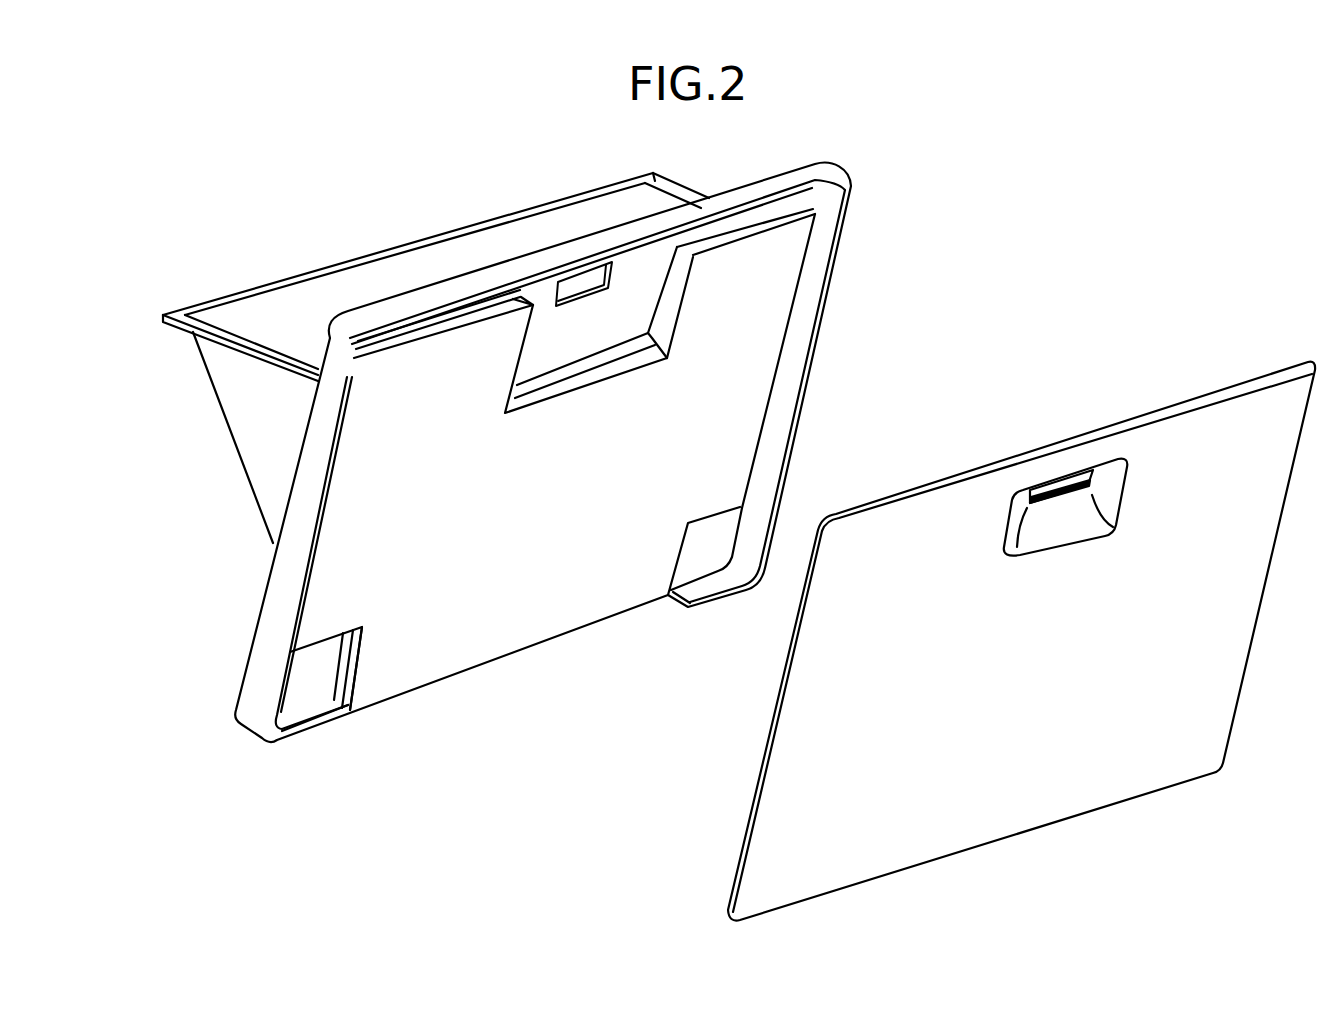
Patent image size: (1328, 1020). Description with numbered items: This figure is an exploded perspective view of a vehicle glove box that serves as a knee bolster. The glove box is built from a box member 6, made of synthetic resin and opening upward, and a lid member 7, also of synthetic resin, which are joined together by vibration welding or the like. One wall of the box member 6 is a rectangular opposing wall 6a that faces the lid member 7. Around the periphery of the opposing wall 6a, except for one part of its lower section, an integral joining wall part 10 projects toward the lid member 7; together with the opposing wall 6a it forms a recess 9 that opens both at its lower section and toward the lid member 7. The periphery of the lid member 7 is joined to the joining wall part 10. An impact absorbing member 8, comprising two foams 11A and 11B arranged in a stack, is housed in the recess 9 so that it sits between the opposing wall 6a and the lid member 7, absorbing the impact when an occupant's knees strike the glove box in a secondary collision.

The box member 6 is at (246, 435).
The opposing wall 6a is at (645, 280).
The lid member 7 is at (1069, 666).
The impact absorbing member 8 is at (586, 499).
The recess 9 is at (592, 338).
The joining wall part 10 is at (810, 370).
The foam 11A is at (333, 673).
The foam 11B is at (347, 670).